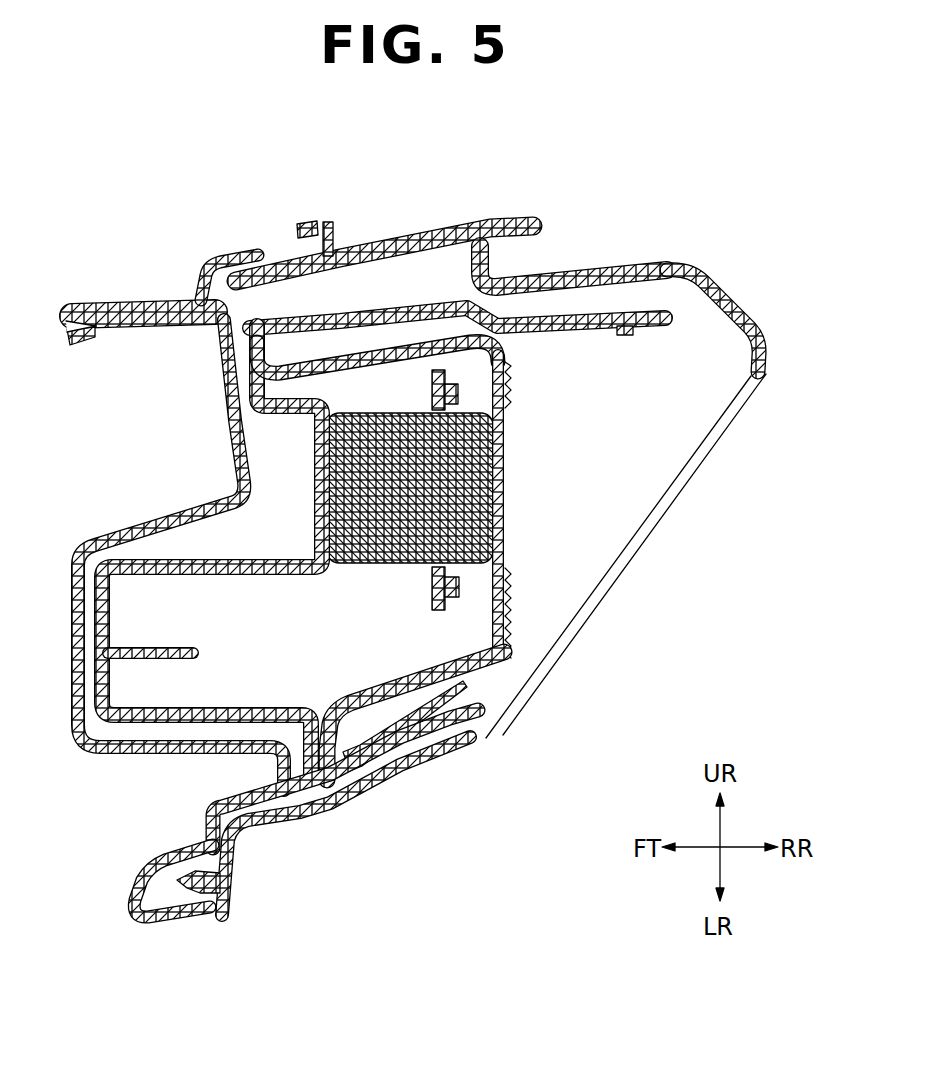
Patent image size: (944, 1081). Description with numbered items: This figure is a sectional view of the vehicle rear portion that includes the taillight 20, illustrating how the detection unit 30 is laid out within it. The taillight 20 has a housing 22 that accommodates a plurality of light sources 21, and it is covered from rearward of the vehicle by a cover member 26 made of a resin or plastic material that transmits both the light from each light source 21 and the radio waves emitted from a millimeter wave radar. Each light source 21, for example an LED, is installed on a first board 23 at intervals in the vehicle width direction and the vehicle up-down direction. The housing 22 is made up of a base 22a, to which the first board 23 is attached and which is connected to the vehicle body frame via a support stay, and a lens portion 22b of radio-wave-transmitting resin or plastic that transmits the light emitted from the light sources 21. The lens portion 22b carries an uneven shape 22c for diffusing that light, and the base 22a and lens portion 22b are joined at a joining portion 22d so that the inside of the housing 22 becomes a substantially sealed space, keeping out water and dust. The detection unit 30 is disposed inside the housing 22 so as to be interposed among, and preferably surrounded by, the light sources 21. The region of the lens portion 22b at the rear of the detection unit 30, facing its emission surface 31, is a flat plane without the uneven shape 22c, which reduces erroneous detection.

The taillight 20 is at (687, 223).
The light source 21 is at (457, 606).
The housing 22 is at (398, 350).
The base 22a is at (135, 727).
The lens portion 22b is at (500, 662).
The uneven shape 22c is at (506, 633).
The joining portion 22d is at (305, 792).
The first board 23 is at (432, 591).
The cover member 26 is at (765, 332).
The detection unit 30 is at (484, 440).
The emission surface 31 is at (503, 503).